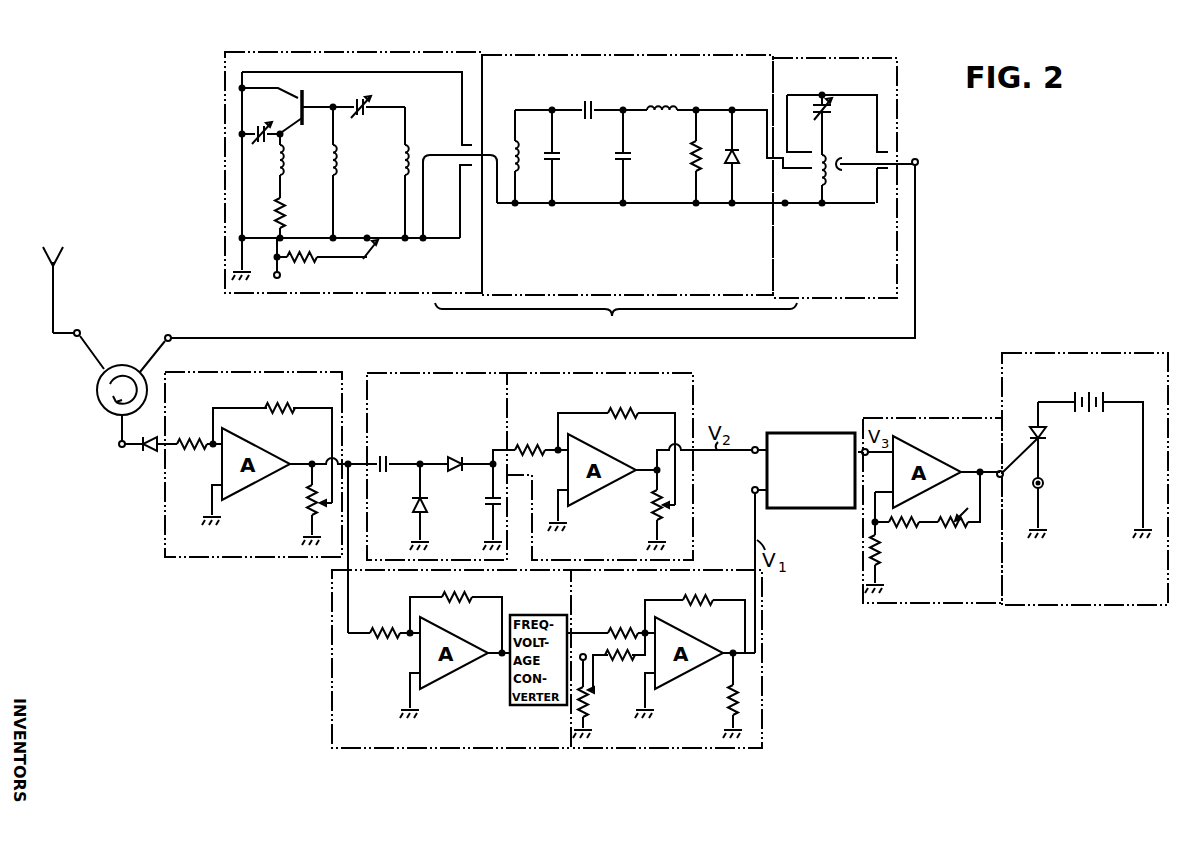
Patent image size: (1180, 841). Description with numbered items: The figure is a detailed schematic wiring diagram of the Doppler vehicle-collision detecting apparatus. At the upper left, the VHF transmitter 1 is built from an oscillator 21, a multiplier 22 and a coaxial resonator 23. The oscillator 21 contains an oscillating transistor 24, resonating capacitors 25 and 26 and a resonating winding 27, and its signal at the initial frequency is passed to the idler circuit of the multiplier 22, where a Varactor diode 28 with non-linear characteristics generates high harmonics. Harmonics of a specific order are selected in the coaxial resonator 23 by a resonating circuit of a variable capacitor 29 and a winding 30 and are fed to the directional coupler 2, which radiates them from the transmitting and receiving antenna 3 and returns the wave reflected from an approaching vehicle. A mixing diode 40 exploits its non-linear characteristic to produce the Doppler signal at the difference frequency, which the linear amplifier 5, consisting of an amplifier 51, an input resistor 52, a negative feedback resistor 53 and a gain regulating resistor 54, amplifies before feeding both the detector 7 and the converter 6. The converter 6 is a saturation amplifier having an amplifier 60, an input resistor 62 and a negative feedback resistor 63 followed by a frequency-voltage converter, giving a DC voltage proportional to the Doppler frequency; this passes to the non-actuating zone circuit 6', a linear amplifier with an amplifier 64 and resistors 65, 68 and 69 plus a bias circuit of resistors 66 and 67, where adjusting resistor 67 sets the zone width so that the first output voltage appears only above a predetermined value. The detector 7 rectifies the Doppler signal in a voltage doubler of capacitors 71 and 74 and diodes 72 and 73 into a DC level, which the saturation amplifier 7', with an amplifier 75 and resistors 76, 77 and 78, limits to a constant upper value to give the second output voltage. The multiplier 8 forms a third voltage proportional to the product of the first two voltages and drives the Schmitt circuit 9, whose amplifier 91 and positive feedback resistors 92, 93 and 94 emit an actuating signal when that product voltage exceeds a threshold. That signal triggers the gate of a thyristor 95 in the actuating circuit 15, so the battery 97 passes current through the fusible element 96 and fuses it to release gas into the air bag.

The VHF transmitter 1 is at (616, 322).
The directional coupler 2 is at (119, 376).
The transmitting and receiving antenna 3 is at (61, 291).
The amplifier 5 is at (222, 560).
The converter 6 is at (451, 672).
The non-actuating zone circuit 6' is at (666, 674).
The detector 7 is at (437, 453).
The saturation amplifier 7' is at (600, 453).
The multiplier 8 is at (790, 433).
The Schmitt circuit 9 is at (898, 418).
The actuating circuit 15 is at (1066, 352).
The oscillator 21 is at (404, 53).
The multiplier 22 is at (552, 56).
The coaxial resonator 23 is at (806, 58).
The oscillating transistor 24 is at (312, 92).
The resonating capacitor 25 is at (261, 122).
The resonating capacitor 26 is at (365, 124).
The resonating winding 27 is at (402, 161).
The Varactor diode 28 is at (745, 156).
The variable capacitor 29 is at (816, 114).
The winding 30 is at (818, 170).
The mixing diode 40 is at (151, 459).
The amplifier 51 is at (245, 484).
The input resistor 52 is at (174, 443).
The negative feedback resistor 53 is at (267, 408).
The gain regulating resistor 54 is at (304, 504).
The amplifier 60 is at (442, 669).
The input resistor 62 is at (368, 632).
The negative feedback resistor 63 is at (471, 600).
The amplifier 64 is at (680, 677).
The resistor 65 is at (610, 634).
The resistor 66 is at (614, 658).
The resistor 67 is at (587, 706).
The resistor 68 is at (694, 602).
The resistor 69 is at (724, 698).
The capacitor 71 is at (379, 457).
The diode 72 is at (413, 502).
The diode 73 is at (446, 460).
The capacitor 74 is at (486, 498).
The amplifier 75 is at (579, 490).
The resistor 76 is at (529, 446).
The resistor 77 is at (612, 413).
The resistor 78 is at (648, 509).
The amplifier 91 is at (934, 446).
The positive feedback resistor 92 is at (876, 548).
The positive feedback resistor 93 is at (907, 526).
The positive feedback resistor 94 is at (956, 526).
The thyristor 95 is at (1040, 440).
The fusible element 96 is at (1043, 488).
The battery 97 is at (1090, 410).